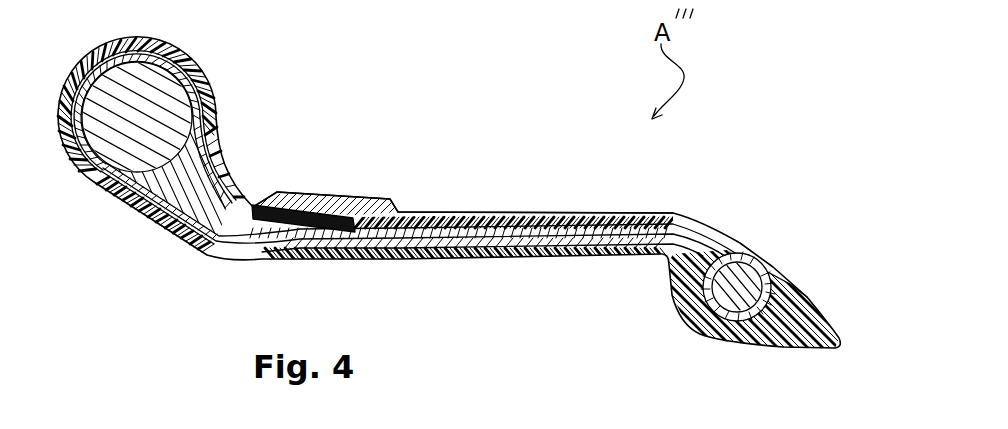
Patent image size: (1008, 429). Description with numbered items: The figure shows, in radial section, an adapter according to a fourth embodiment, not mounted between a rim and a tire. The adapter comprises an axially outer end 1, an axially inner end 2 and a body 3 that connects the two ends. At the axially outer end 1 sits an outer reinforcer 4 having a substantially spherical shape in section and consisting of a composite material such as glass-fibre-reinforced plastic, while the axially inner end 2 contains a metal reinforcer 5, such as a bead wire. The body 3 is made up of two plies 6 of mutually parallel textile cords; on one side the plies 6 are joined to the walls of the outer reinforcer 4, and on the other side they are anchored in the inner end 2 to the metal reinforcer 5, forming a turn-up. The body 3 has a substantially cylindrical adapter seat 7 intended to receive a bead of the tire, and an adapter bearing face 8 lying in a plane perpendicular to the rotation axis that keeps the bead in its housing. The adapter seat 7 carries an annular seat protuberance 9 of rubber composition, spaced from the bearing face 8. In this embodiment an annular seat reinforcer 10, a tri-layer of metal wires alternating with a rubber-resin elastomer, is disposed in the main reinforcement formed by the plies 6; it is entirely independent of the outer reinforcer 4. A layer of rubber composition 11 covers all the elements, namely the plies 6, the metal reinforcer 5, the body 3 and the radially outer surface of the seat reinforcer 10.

The axially outer end 1 is at (193, 45).
The axially inner end 2 is at (819, 307).
The body 3 is at (444, 282).
The outer reinforcer 4 is at (124, 149).
The metal reinforcer 5 is at (717, 304).
The ply 6 is at (498, 248).
The adapter seat 7 is at (272, 206).
The adapter bearing face 8 is at (233, 197).
The annular seat protuberance 9 is at (338, 198).
The annular seat reinforcer 10 is at (296, 258).
The layer of rubber composition 11 is at (400, 210).